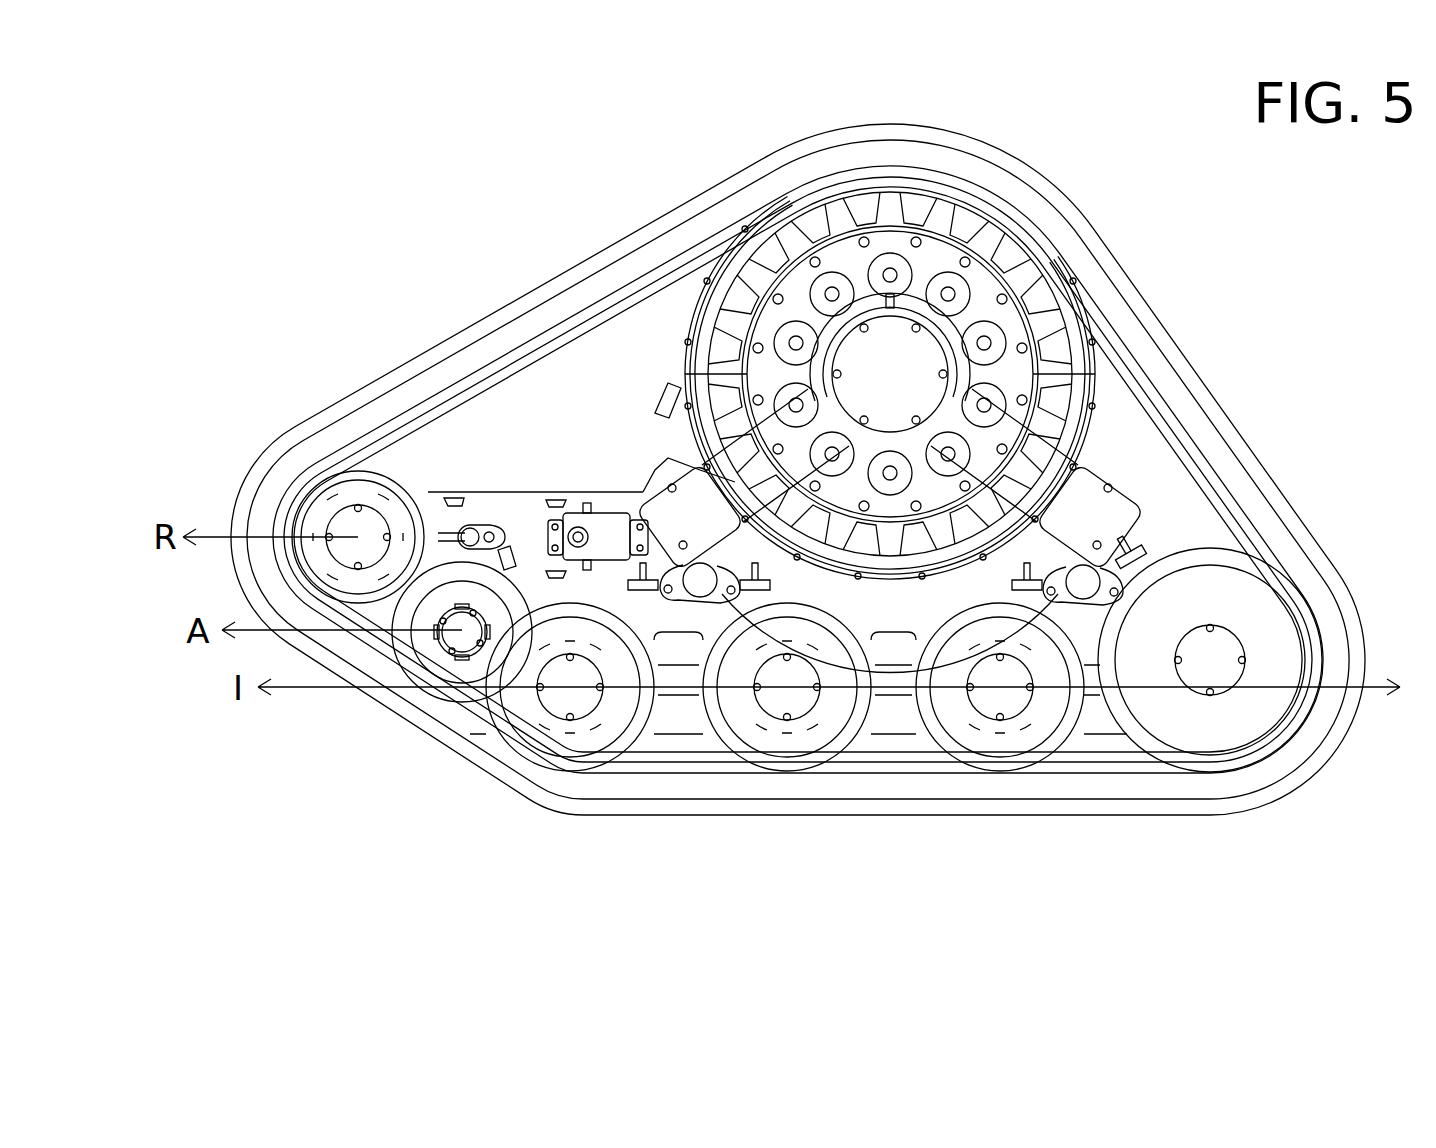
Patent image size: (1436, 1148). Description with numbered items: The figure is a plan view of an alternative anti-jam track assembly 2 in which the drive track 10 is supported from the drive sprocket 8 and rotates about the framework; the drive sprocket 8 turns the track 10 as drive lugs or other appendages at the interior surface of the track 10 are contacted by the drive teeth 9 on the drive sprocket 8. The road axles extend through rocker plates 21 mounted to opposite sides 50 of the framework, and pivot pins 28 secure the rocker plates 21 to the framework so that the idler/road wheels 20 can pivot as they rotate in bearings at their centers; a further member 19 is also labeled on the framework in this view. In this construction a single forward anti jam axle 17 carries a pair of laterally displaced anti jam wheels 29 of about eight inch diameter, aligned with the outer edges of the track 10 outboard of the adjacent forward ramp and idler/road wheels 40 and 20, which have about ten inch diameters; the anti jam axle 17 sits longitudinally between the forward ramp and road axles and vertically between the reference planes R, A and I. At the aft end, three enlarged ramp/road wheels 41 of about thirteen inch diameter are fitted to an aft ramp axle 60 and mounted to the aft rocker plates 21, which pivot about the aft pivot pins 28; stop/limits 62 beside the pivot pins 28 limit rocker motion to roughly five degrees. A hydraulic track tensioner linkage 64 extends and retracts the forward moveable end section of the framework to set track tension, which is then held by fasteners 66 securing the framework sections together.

The track assembly 2 is at (418, 176).
The drive sprocket 8 is at (845, 258).
The drive teeth 9 is at (1113, 357).
The drive track 10 is at (1183, 352).
The anti jam axle 17 is at (458, 637).
The support member 19 is at (472, 526).
The idler/road wheels 20 is at (763, 740).
The rocker plates 21 is at (678, 692).
The pivot pins 28 is at (705, 592).
The anti jam wheels 29 is at (445, 709).
The forward ramp wheels 40 is at (332, 500).
The ramp/road wheels 41 is at (1238, 733).
The sides of the framework 50 is at (530, 500).
The aft ramp axle 60 is at (1213, 658).
The stop/limits 62 is at (1147, 530).
The hydraulic track tensioner linkage 64 is at (578, 525).
The fasteners 66 is at (452, 496).